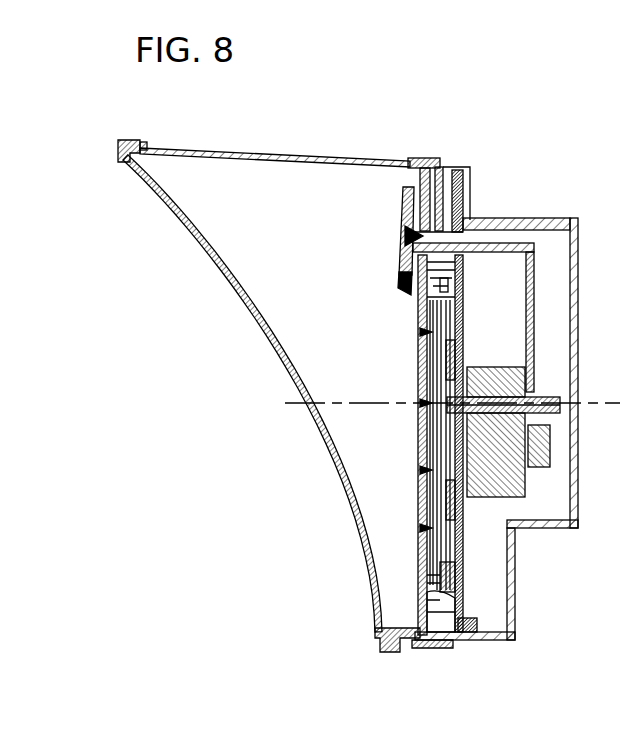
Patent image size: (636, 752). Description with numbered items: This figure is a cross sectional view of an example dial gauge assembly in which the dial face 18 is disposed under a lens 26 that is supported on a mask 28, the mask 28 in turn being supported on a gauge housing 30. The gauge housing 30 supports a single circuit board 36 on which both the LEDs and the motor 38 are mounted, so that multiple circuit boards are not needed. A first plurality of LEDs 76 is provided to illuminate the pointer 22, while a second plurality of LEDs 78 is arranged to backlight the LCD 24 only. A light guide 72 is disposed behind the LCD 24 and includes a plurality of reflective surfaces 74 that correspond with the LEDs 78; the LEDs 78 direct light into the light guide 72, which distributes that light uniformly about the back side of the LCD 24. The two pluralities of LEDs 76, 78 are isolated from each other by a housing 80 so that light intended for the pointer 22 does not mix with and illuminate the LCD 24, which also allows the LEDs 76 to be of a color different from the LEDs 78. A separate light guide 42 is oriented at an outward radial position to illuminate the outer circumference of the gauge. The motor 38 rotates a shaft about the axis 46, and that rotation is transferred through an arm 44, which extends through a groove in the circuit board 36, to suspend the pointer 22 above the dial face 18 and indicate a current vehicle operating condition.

The dial face 18 is at (425, 600).
The pointer 22 is at (423, 214).
The LCD 24 is at (418, 374).
The lens 26 is at (121, 147).
The mask 28 is at (298, 154).
The gauge housing 30 is at (449, 166).
The circuit board 36 is at (509, 531).
The motor 38 is at (513, 487).
The light guide 42 is at (430, 225).
The arm 44 is at (536, 246).
The axis 46 is at (596, 394).
The light guide 72 is at (463, 581).
The reflective surfaces 74 is at (430, 332).
The first plurality of LEDs 76 is at (462, 284).
The second plurality of LEDs 78 is at (458, 362).
The housing 80 is at (409, 256).